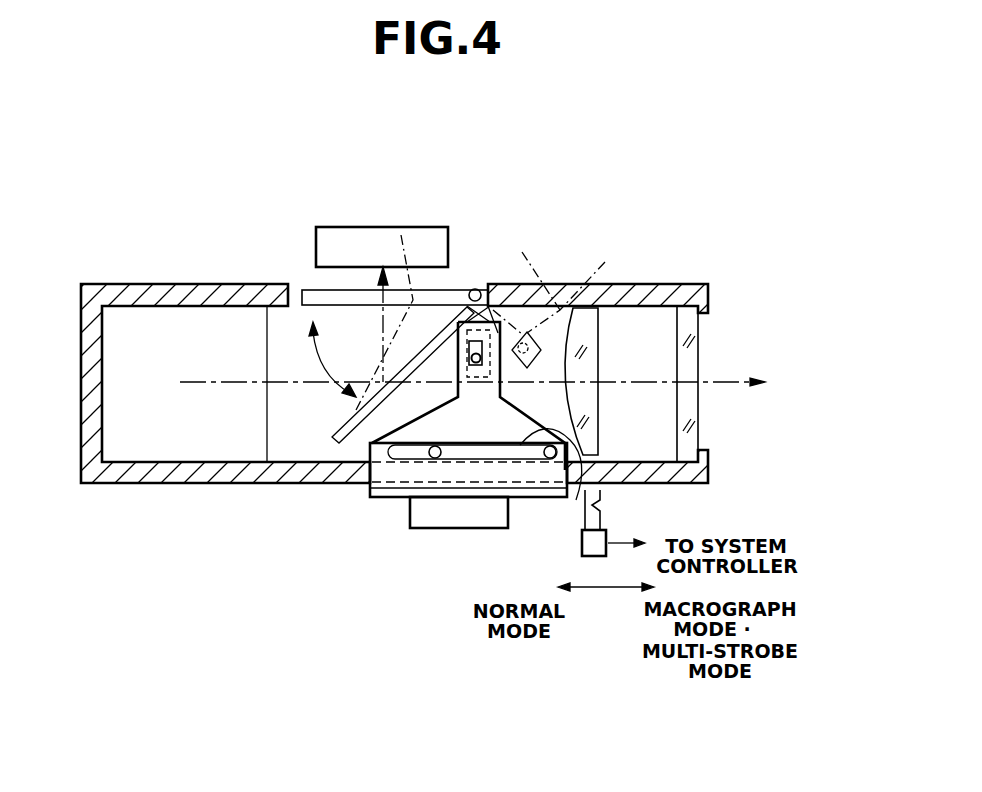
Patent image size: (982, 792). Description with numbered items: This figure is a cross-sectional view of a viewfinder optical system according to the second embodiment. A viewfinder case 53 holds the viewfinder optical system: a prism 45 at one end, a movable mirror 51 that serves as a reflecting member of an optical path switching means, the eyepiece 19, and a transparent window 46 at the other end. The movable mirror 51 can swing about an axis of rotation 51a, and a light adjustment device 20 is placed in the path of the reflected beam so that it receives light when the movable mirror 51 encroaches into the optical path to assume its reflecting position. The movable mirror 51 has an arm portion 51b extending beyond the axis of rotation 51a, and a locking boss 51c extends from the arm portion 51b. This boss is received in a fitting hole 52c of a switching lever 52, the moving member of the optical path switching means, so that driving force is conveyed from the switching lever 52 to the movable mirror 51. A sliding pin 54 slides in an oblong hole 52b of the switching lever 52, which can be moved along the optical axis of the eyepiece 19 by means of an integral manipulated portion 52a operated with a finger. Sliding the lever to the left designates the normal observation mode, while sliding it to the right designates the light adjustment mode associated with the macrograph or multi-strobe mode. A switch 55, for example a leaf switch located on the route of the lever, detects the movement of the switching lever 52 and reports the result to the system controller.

The eyepiece 19 is at (603, 342).
The light adjustment device 20 is at (340, 246).
The prism 45 is at (188, 316).
The transparent window 46 is at (700, 352).
The movable mirror 51 is at (433, 290).
The axis of rotation 51a is at (473, 289).
The arm portion 51b is at (490, 312).
The locking boss 51c is at (500, 357).
The switching lever 52 is at (378, 450).
The manipulated portion 52a is at (418, 512).
The oblong hole 52b is at (576, 500).
The fitting hole 52c is at (470, 350).
The viewfinder case 53 is at (97, 473).
The sliding pin 54 is at (548, 455).
The switch 55 is at (607, 520).